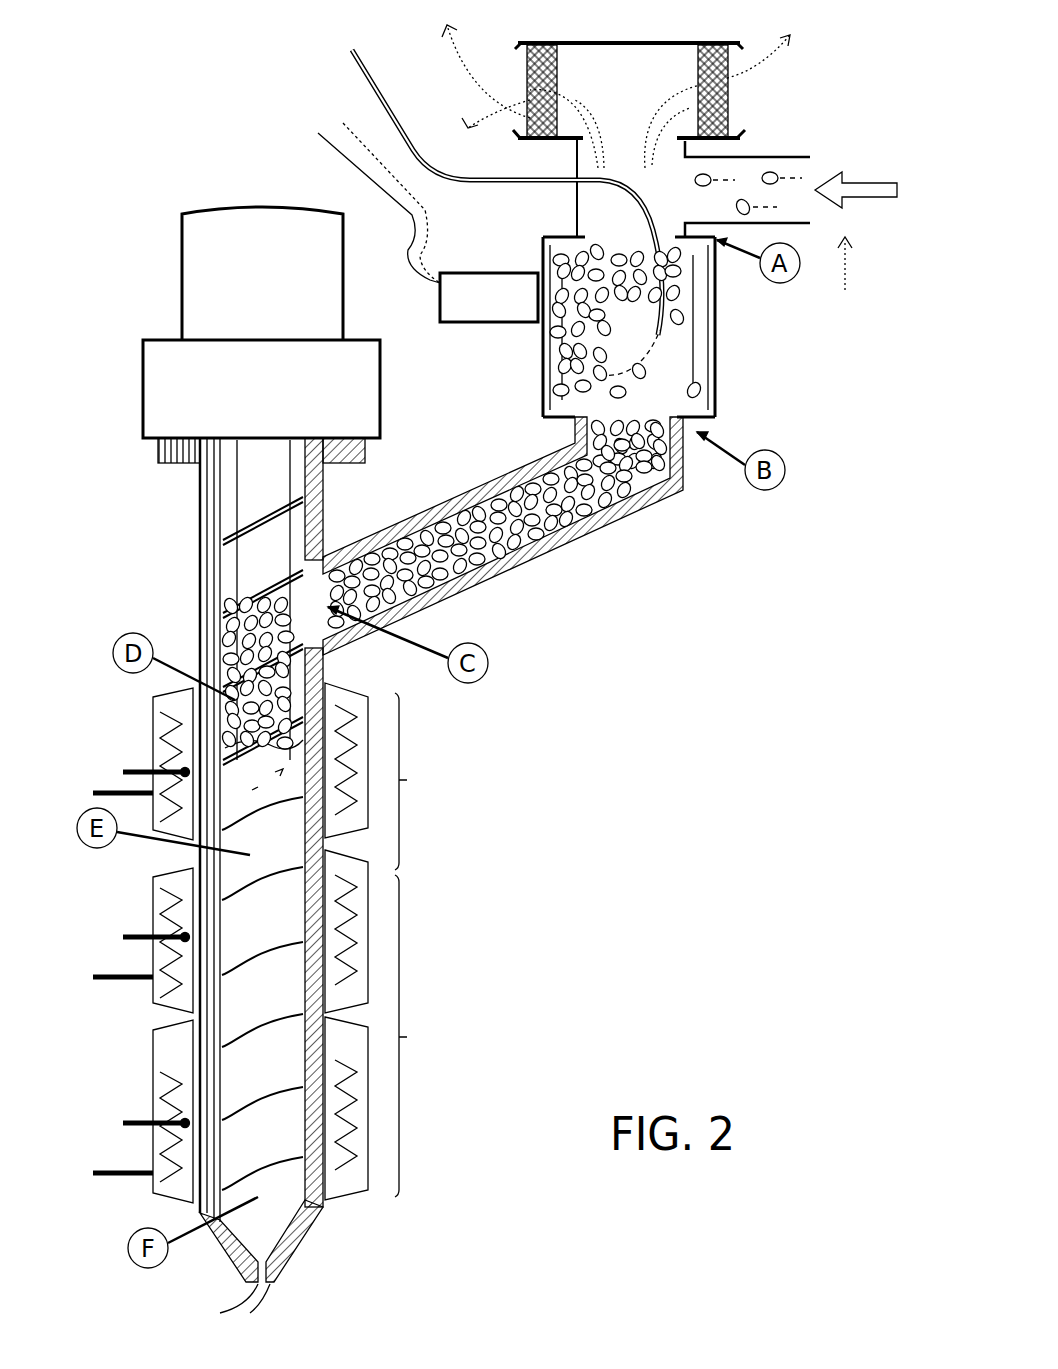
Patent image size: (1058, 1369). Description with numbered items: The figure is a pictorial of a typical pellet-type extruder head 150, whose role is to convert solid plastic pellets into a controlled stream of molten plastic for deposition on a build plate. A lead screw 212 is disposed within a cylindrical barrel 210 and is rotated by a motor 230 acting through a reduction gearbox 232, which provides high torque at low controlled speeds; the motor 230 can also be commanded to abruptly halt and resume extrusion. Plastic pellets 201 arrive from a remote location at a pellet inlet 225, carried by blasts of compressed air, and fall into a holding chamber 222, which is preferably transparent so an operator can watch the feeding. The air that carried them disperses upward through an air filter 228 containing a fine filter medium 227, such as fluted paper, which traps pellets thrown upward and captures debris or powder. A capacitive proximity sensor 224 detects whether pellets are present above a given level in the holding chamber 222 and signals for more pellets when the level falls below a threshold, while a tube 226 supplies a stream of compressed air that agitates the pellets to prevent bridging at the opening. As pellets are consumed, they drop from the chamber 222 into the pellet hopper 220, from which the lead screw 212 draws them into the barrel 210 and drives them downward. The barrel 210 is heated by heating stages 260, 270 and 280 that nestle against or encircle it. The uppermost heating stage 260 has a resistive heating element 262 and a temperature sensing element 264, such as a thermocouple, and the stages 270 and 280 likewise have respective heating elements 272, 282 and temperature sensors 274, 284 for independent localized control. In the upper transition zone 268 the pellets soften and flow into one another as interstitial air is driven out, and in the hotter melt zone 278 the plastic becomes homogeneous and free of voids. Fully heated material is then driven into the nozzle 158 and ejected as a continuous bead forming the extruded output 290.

The pellet-type extruder head 150 is at (783, 791).
The nozzle 158 is at (315, 1240).
The plastic pellets 201 is at (768, 176).
The cylindrical barrel 210 is at (200, 570).
The lead screw 212 is at (256, 478).
The pellet hopper 220 is at (548, 565).
The holding chamber 222 is at (715, 325).
The capacitive proximity sensor 224 is at (508, 314).
The pellet inlet 225 is at (856, 237).
The tube 226 is at (373, 98).
The filter medium 227 is at (540, 45).
The air filter 228 is at (636, 43).
The motor 230 is at (285, 279).
The reduction gearbox 232 is at (285, 401).
The uppermost heating stage 260 is at (153, 700).
The heating element 262 is at (165, 736).
The temperature sensing element 264 is at (160, 748).
The transition zone 268 is at (545, 822).
The heating stage 270 is at (153, 880).
The heating element 272 is at (165, 902).
The temperature sensor 274 is at (152, 916).
The melt zone 278 is at (517, 1070).
The heating stage 280 is at (153, 1048).
The heating element 282 is at (165, 1082).
The temperature sensor 284 is at (150, 1108).
The extruded output 290 is at (268, 1290).